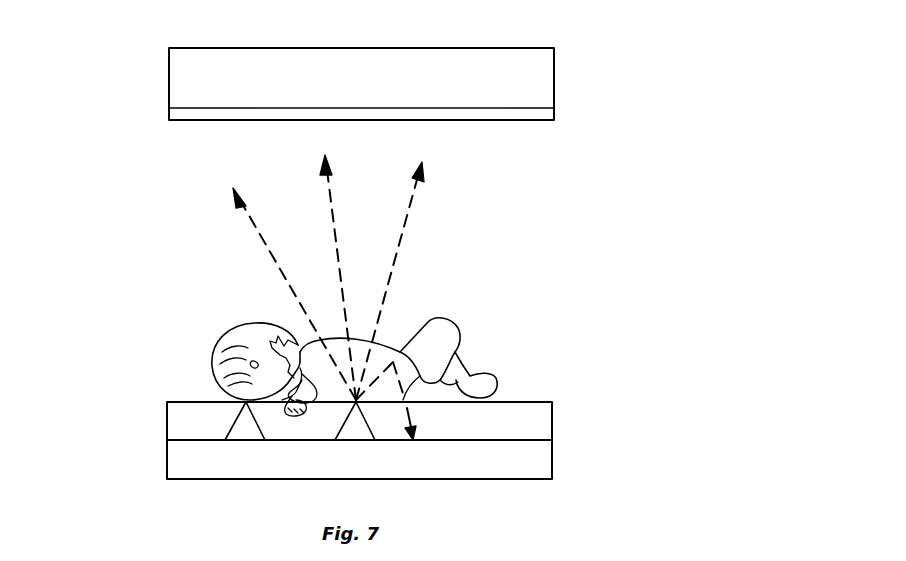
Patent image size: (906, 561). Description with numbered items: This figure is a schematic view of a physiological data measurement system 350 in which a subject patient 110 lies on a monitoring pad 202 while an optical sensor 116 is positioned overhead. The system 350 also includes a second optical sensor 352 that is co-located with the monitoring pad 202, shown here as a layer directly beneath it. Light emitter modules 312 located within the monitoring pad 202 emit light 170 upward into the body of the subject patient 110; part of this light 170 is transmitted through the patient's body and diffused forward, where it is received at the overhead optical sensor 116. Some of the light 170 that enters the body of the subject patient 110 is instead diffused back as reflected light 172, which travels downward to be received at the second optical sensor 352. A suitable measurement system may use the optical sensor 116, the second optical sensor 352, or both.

The physiological data measurement system 350 is at (112, 92).
The optical sensor 116 is at (554, 82).
The light 170 is at (270, 257).
The subject patient 110 is at (475, 336).
The reflected light 172 is at (407, 407).
The monitoring pad 202 is at (167, 422).
The second optical sensor 352 is at (552, 452).
The light emitter modules 312 is at (244, 430).